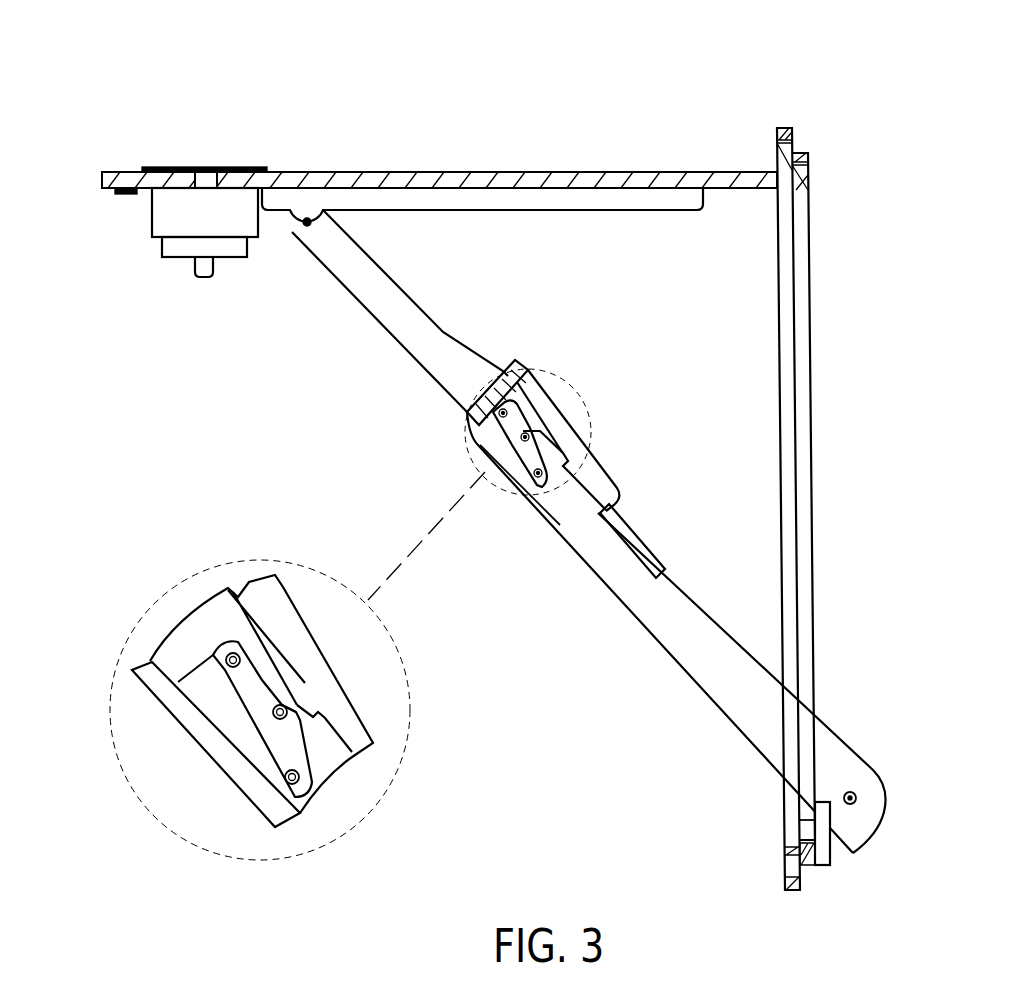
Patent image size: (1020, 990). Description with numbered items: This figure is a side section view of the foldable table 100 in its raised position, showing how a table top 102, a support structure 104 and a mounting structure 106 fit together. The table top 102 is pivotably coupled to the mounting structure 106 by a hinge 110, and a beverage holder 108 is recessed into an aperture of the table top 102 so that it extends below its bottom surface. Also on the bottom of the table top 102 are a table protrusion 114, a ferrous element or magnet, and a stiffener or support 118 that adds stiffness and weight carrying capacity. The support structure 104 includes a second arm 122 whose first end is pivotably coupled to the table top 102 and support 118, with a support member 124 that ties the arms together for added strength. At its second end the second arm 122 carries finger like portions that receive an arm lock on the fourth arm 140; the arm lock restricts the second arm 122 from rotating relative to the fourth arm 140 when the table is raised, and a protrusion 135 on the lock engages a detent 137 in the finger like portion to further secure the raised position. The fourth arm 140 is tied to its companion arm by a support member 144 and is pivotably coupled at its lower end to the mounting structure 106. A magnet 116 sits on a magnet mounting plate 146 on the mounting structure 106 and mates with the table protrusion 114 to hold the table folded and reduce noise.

The foldable table 100 is at (340, 85).
The table top 102 is at (462, 172).
The support structure 104 is at (540, 510).
The mounting structure 106 is at (787, 128).
The beverage holder 108 is at (165, 223).
The hinge 110 is at (777, 172).
The table protrusion 114 is at (115, 190).
The magnet 116 is at (810, 822).
The support 118 is at (605, 212).
The second arm 122 is at (415, 342).
The support member 124 is at (520, 363).
The protrusion 135 is at (273, 713).
The detent 137 is at (285, 708).
The fourth arm 140 is at (673, 628).
The support member 144 is at (637, 548).
The magnet mounting plate 146 is at (823, 855).